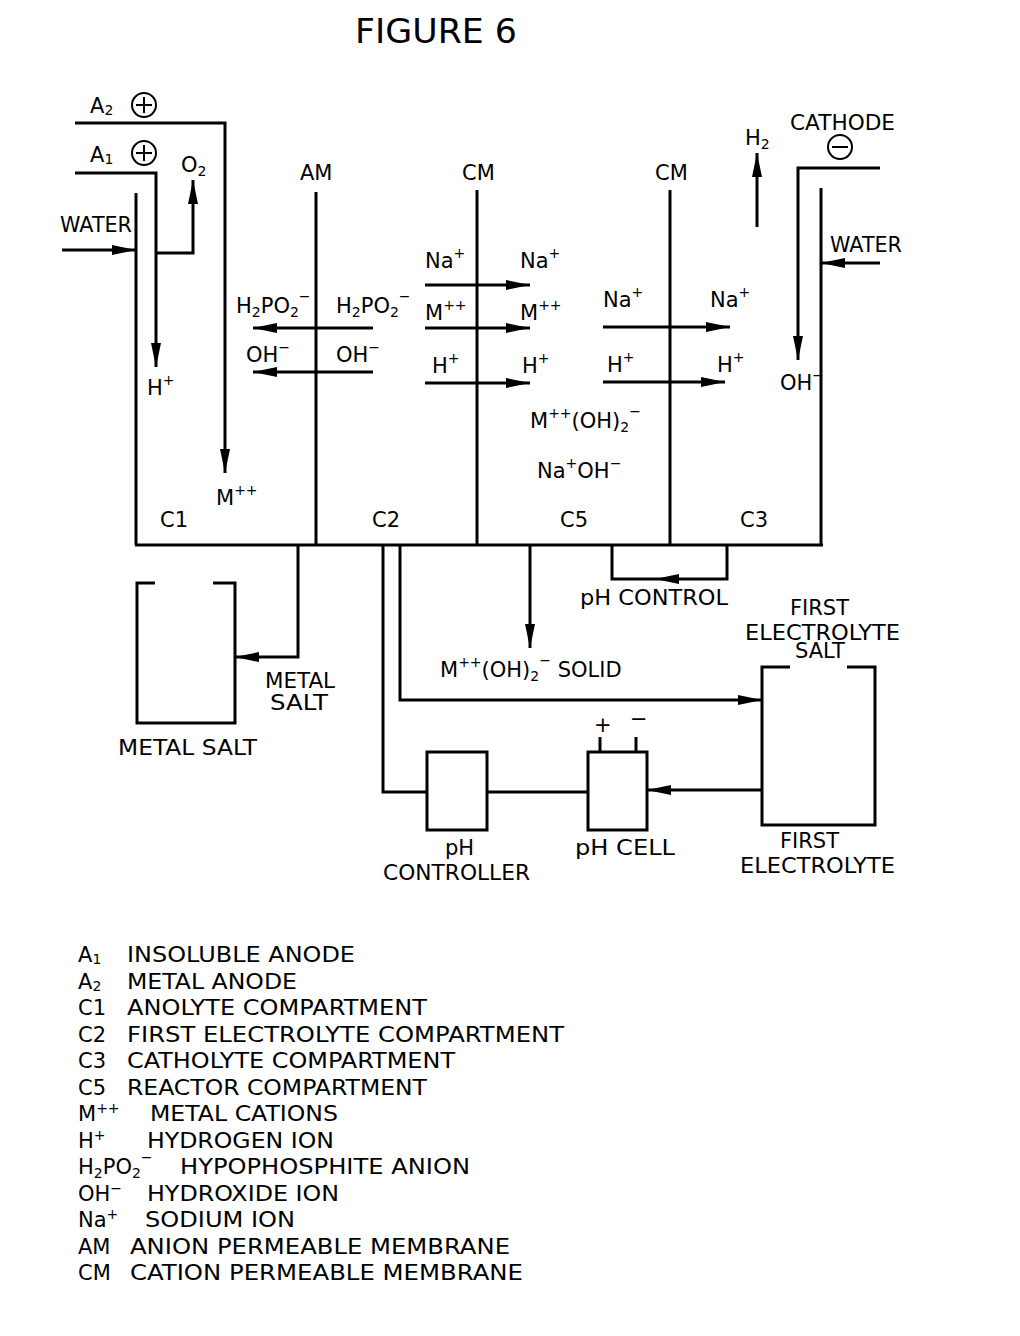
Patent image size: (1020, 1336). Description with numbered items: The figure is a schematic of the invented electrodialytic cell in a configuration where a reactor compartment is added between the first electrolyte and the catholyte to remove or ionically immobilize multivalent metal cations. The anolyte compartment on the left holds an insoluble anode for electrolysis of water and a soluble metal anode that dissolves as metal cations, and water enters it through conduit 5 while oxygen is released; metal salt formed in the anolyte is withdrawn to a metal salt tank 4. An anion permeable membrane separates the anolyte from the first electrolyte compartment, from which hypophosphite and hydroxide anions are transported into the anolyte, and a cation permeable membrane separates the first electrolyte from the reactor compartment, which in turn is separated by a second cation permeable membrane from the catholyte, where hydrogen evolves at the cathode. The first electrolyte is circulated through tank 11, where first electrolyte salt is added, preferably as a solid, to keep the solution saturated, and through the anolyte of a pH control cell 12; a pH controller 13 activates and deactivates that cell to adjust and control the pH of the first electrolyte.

The metal salt tank 4 is at (186, 653).
The conduit 5 is at (99, 221).
The tank 11 is at (818, 746).
The pH control cell 12 is at (617, 791).
The pH controller 13 is at (457, 791).